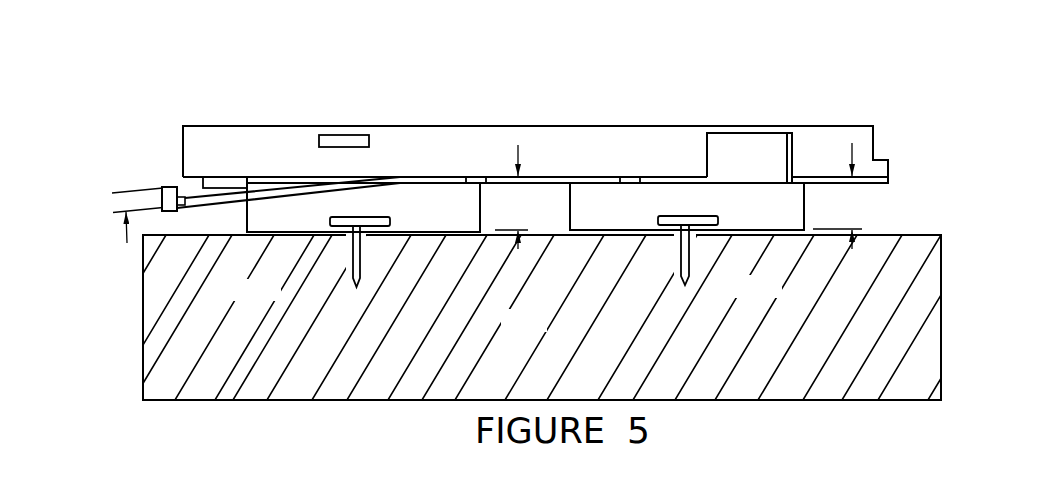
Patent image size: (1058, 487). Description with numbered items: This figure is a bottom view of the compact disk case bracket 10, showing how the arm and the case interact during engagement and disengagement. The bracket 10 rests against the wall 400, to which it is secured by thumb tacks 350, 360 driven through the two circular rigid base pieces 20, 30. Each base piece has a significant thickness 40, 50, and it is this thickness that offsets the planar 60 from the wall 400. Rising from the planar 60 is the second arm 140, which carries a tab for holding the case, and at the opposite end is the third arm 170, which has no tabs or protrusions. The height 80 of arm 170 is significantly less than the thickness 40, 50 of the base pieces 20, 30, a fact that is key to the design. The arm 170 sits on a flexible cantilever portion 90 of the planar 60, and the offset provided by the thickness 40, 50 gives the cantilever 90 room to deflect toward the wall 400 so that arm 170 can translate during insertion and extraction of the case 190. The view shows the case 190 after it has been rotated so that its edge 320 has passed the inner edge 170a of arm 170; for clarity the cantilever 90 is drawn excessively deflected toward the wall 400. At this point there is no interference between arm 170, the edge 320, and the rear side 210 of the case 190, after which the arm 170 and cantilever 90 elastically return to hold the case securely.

The bracket 10 is at (561, 176).
The circular rigid base piece 20 is at (409, 206).
The circular rigid base piece 30 is at (667, 202).
The thickness of rigid base piece 40 is at (515, 197).
The thickness of rigid base piece 50 is at (840, 196).
The planar 60 is at (606, 176).
The height of arm 80 is at (109, 184).
The flexible cantilever portion 90 is at (201, 196).
The second arm 140 is at (750, 151).
The third arm 170 is at (167, 183).
The inner edge of arm 170a is at (117, 129).
The case 190 is at (477, 146).
The rear side 210 is at (193, 172).
The edge 320 is at (175, 167).
The thumb tack 350 is at (351, 246).
The thumb tack 360 is at (688, 255).
The wall 400 is at (547, 312).